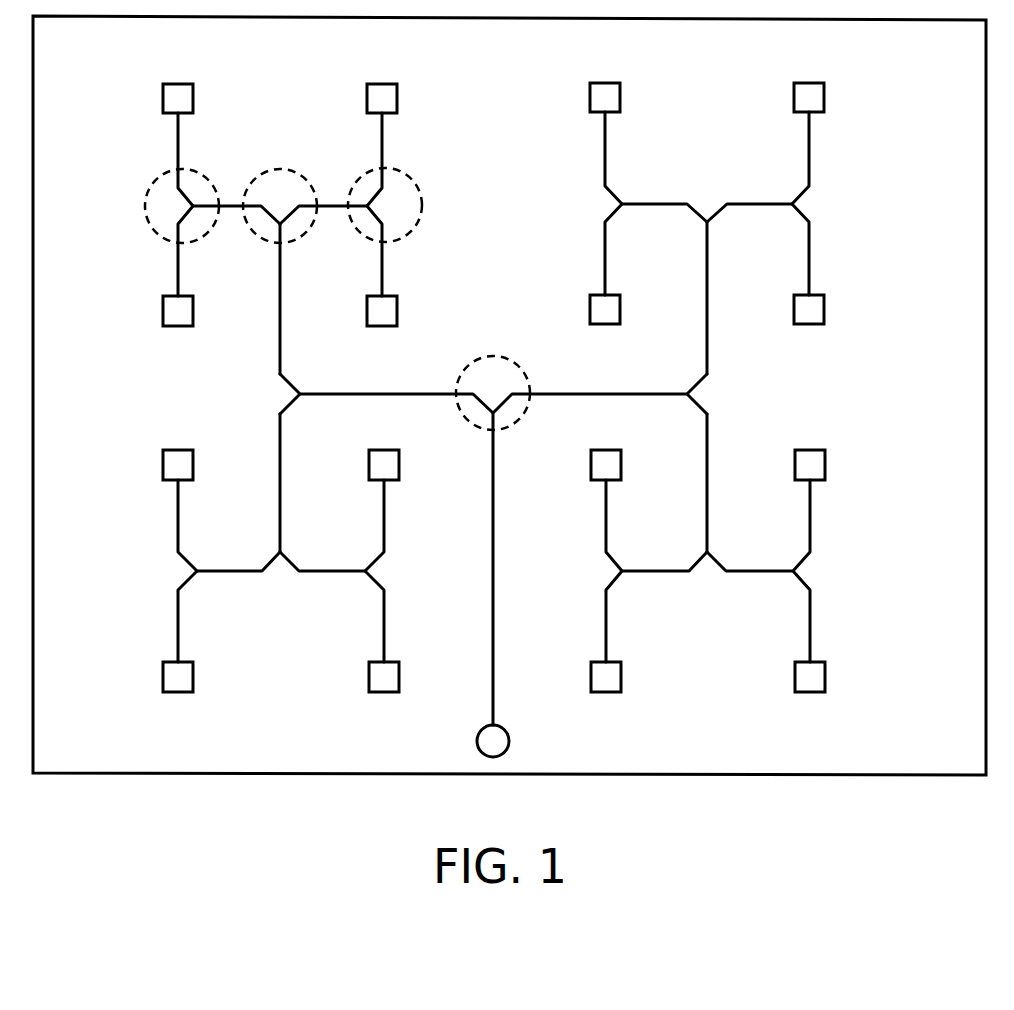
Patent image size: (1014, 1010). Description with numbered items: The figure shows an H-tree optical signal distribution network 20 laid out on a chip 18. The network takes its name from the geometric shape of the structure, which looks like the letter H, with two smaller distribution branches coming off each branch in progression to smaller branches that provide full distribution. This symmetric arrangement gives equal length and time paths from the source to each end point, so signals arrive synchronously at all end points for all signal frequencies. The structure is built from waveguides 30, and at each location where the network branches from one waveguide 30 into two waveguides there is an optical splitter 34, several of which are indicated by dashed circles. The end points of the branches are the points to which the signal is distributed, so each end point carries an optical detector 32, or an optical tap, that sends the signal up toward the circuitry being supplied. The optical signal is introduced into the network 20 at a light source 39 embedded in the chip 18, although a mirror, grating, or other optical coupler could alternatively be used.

The substrate 18 is at (153, 775).
The signal distribution network 20 is at (905, 197).
The waveguide 30 is at (368, 393).
The optical detector 32 is at (167, 84).
The optical splitter 34 is at (147, 218).
The light source 39 is at (511, 740).